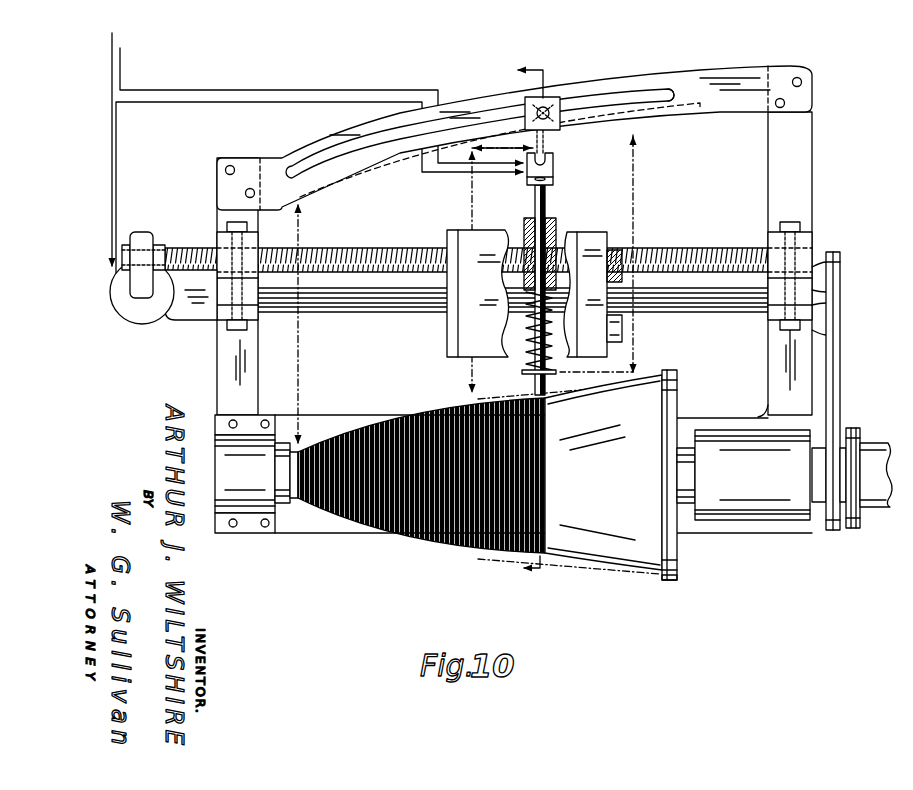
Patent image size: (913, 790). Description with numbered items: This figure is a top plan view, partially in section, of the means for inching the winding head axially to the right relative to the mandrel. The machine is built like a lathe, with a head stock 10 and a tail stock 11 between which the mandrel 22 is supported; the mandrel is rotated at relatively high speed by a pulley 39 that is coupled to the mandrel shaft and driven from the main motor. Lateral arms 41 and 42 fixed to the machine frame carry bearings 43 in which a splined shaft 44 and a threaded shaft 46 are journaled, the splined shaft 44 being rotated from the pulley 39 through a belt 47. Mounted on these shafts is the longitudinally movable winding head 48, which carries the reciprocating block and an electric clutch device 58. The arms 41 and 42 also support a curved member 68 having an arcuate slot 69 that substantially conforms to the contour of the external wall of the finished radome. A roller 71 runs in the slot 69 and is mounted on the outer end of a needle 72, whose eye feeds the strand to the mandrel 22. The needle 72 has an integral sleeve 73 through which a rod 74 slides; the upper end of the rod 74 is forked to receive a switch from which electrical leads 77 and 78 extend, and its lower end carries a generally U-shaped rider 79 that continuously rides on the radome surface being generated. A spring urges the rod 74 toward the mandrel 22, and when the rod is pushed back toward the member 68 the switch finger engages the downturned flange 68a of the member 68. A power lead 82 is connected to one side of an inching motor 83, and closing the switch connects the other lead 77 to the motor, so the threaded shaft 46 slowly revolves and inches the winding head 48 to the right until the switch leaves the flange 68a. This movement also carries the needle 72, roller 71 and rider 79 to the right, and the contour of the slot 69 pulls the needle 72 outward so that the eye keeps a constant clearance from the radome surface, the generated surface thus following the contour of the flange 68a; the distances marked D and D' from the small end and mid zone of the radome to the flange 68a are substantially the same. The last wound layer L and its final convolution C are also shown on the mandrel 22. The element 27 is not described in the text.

The head stock 10 is at (790, 505).
The tail stock 11 is at (254, 494).
The mandrel 22 is at (656, 566).
The flange 27 is at (678, 578).
The pulley 39 is at (860, 520).
The lateral arm 41 is at (222, 378).
The lateral arm 42 is at (775, 366).
The bearings 43 is at (218, 240).
The splined shaft 44 is at (402, 313).
The threaded shaft 46 is at (400, 248).
The belt 47 is at (840, 398).
The winding head 48 is at (458, 229).
The electric clutch device 58 is at (628, 342).
The curved member 68 is at (482, 98).
The downturned flange 68a is at (650, 124).
The arcuate slot 69 is at (660, 88).
The roller 71 is at (550, 98).
The needle 72 is at (548, 130).
The sleeve 73 is at (526, 222).
The rod 74 is at (548, 200).
The power lead 77 is at (190, 102).
The electrical lead 78 is at (120, 80).
The rider 79 is at (526, 380).
The power lead 82 is at (111, 146).
The inching motor 83 is at (131, 323).